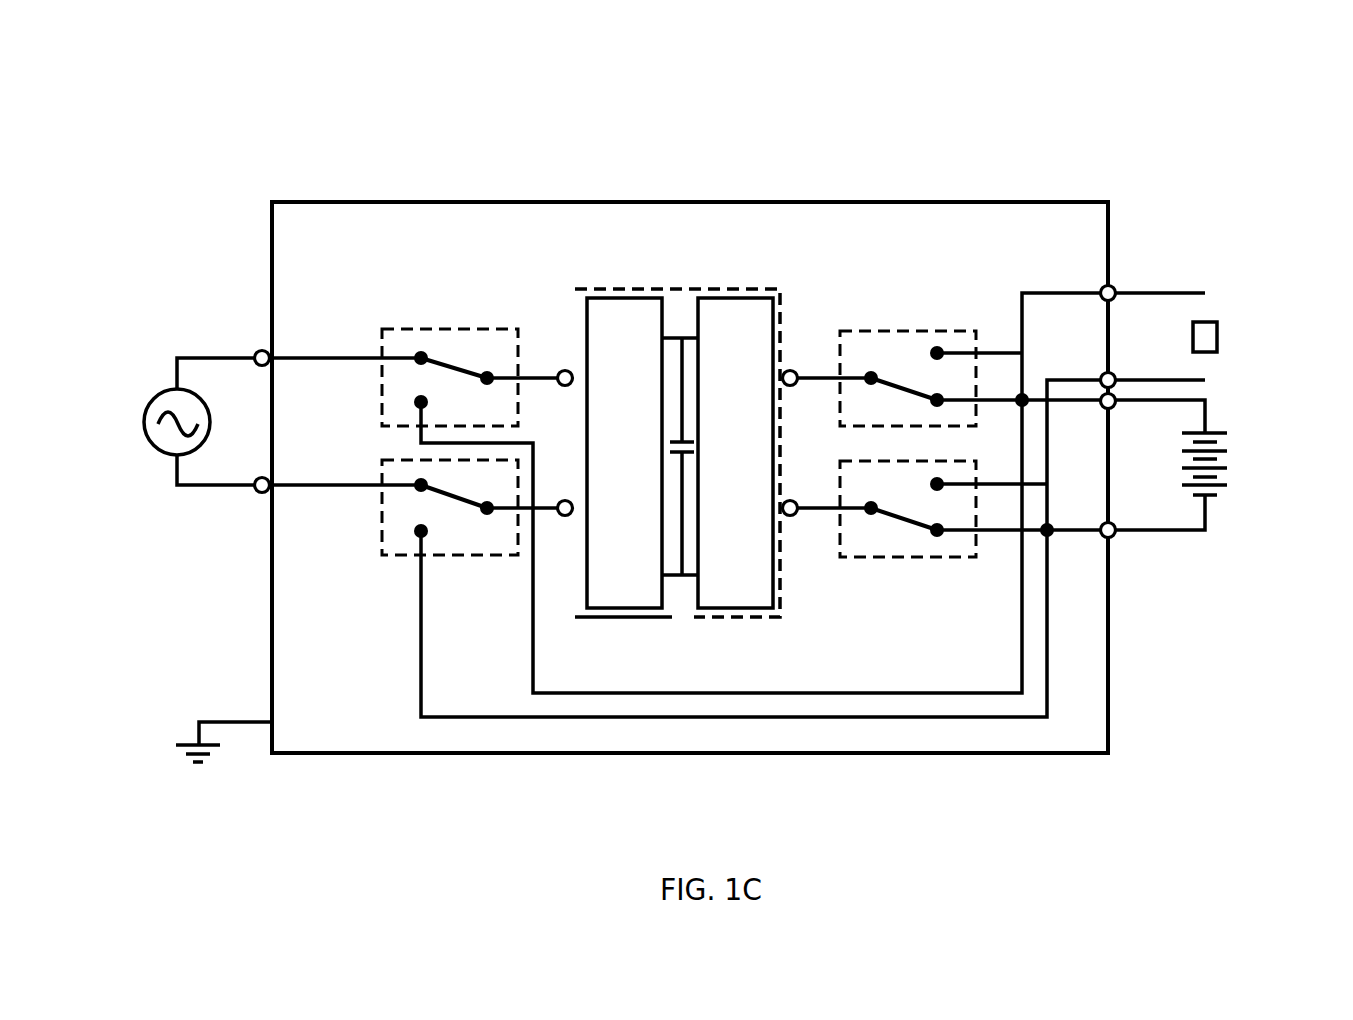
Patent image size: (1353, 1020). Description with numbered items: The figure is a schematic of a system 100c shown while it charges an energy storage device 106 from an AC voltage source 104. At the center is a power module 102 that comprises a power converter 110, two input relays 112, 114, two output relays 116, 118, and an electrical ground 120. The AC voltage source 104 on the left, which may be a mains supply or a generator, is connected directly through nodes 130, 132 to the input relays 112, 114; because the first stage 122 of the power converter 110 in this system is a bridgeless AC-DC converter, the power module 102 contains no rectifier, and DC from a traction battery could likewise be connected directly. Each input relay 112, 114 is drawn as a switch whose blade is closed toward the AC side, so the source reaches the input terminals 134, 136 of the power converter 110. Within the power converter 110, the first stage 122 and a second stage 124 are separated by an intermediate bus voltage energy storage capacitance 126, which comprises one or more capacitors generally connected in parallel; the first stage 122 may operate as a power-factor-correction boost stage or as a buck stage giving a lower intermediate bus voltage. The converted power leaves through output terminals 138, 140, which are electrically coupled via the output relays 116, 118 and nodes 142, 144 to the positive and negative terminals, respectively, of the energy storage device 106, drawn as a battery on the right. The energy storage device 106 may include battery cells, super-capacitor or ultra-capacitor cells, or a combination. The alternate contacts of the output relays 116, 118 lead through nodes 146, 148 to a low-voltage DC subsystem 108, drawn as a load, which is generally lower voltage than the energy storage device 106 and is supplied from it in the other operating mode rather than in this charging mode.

The system 100c is at (913, 127).
The power module 102 is at (391, 200).
The AC voltage source 104 is at (142, 418).
The energy storage device 106 is at (1250, 455).
The low-voltage DC subsystem 108 is at (1217, 335).
The power converter 110 is at (677, 459).
The input relay 112 is at (382, 336).
The input relay 114 is at (382, 540).
The output relay 116 is at (965, 331).
The output relay 118 is at (955, 557).
The electrical ground 120 is at (162, 713).
The first stage 122 is at (625, 315).
The second stage 124 is at (738, 315).
The intermediate bus voltage energy storage capacitance 126 is at (683, 595).
The node 130 is at (256, 353).
The node 132 is at (255, 491).
The input terminal 134 is at (565, 370).
The input terminal 136 is at (565, 516).
The output terminal 138 is at (790, 370).
The output terminal 140 is at (790, 516).
The node 142 is at (1114, 408).
The node 144 is at (1114, 537).
The node 146 is at (1115, 285).
The node 148 is at (1114, 373).